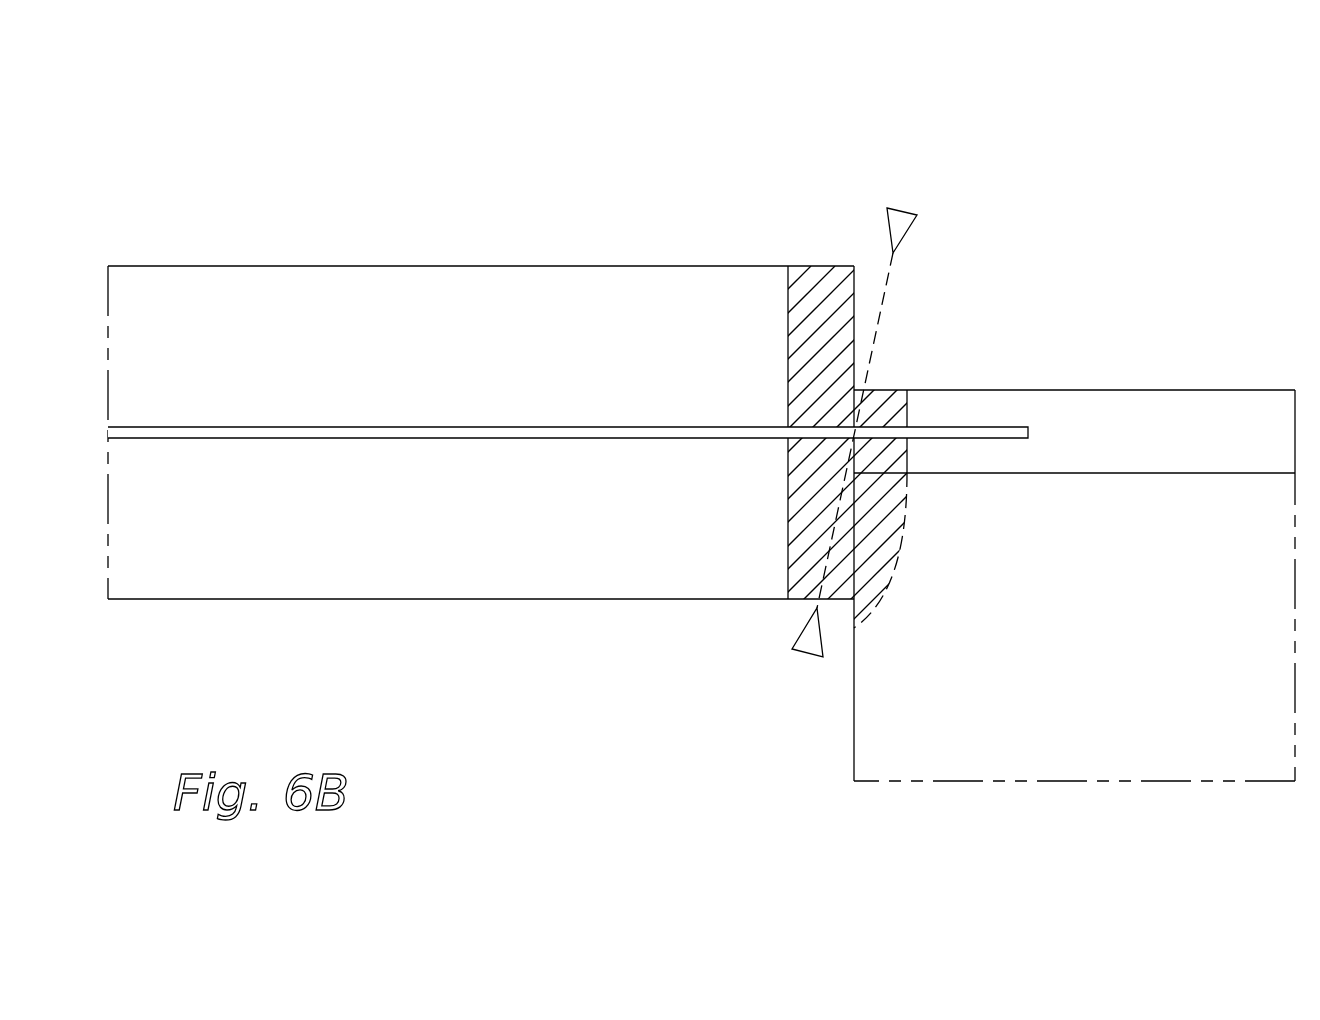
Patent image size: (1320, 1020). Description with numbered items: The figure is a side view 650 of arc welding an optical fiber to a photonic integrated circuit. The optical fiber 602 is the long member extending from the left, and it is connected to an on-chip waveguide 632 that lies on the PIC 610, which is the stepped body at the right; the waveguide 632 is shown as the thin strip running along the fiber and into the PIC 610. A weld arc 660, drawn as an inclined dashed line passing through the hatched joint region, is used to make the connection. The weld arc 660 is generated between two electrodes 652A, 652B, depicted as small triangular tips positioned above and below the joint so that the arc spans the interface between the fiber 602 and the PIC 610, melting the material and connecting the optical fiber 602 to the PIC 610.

The side view 650 is at (218, 74).
The optical fiber 602 is at (418, 265).
The PIC 610 is at (1195, 391).
The on-chip waveguide 632 is at (1030, 432).
The weld arc 660 is at (881, 313).
The electrode 652A is at (912, 228).
The electrode 652B is at (797, 642).